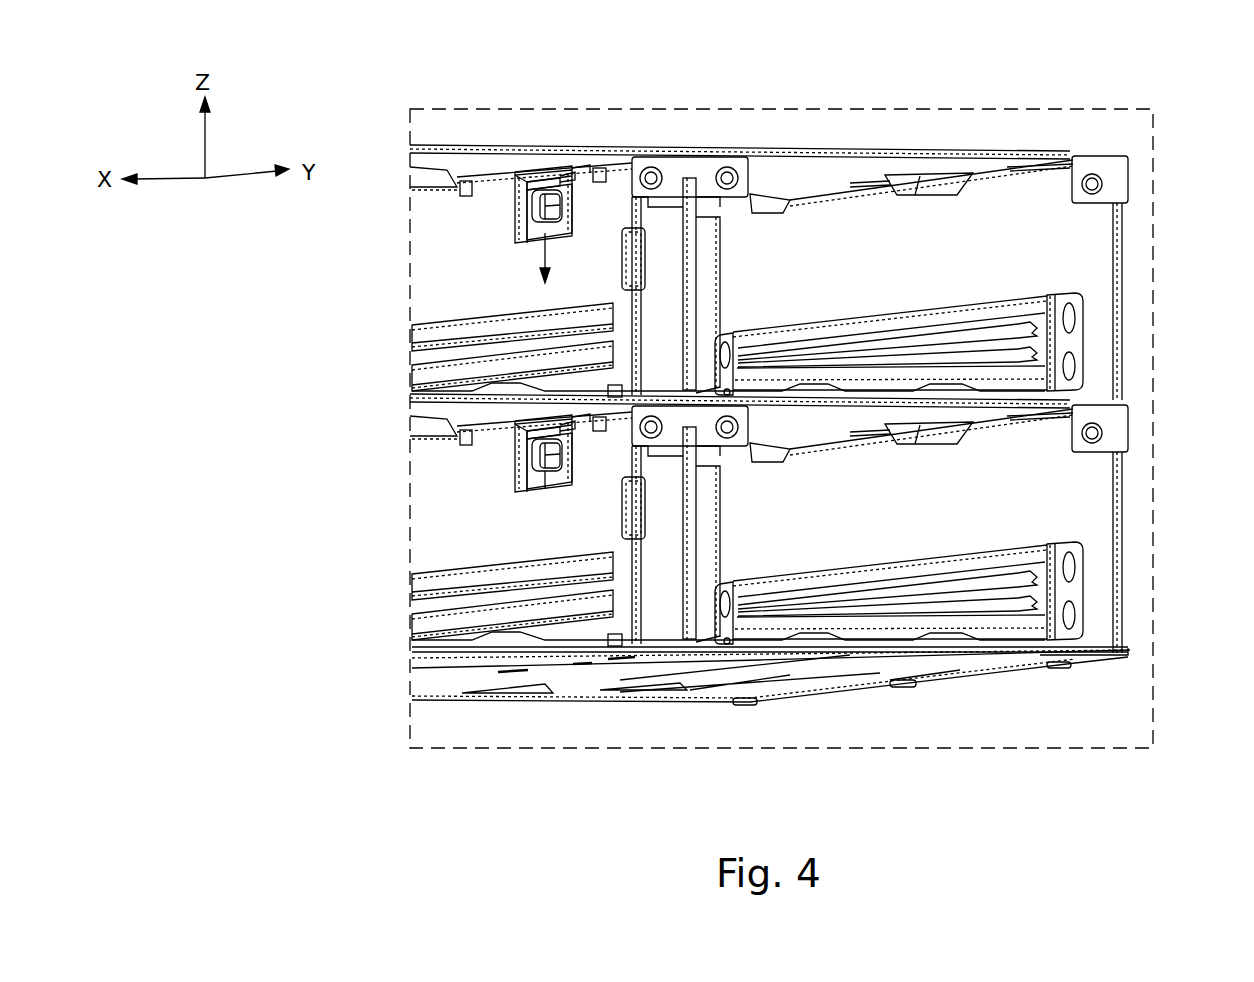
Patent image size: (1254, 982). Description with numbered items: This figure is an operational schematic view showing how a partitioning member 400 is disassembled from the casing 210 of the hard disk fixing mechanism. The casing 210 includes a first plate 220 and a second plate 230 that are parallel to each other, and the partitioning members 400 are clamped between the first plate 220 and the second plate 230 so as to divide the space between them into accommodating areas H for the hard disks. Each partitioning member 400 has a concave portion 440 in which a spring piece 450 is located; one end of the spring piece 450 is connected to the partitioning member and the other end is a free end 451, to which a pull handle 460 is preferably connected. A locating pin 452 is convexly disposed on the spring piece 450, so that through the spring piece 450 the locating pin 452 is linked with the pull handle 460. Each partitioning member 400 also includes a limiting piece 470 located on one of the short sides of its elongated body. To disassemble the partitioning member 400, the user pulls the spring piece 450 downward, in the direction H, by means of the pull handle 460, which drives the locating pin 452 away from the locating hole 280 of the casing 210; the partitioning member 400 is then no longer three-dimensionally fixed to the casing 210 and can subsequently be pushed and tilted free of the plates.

The casing 210 is at (1097, 263).
The first plate 220 is at (1060, 377).
The second plate 230 is at (1042, 158).
The locating hole 280 is at (562, 140).
The partitioning member 400 is at (446, 232).
The concave portion 440 is at (517, 246).
The spring piece 450 is at (533, 166).
The free end 451 is at (572, 170).
The locating pin 452 is at (581, 158).
The pull handle 460 is at (530, 232).
The limiting piece 470 is at (687, 287).
The accommodating area / direction H is at (540, 280).